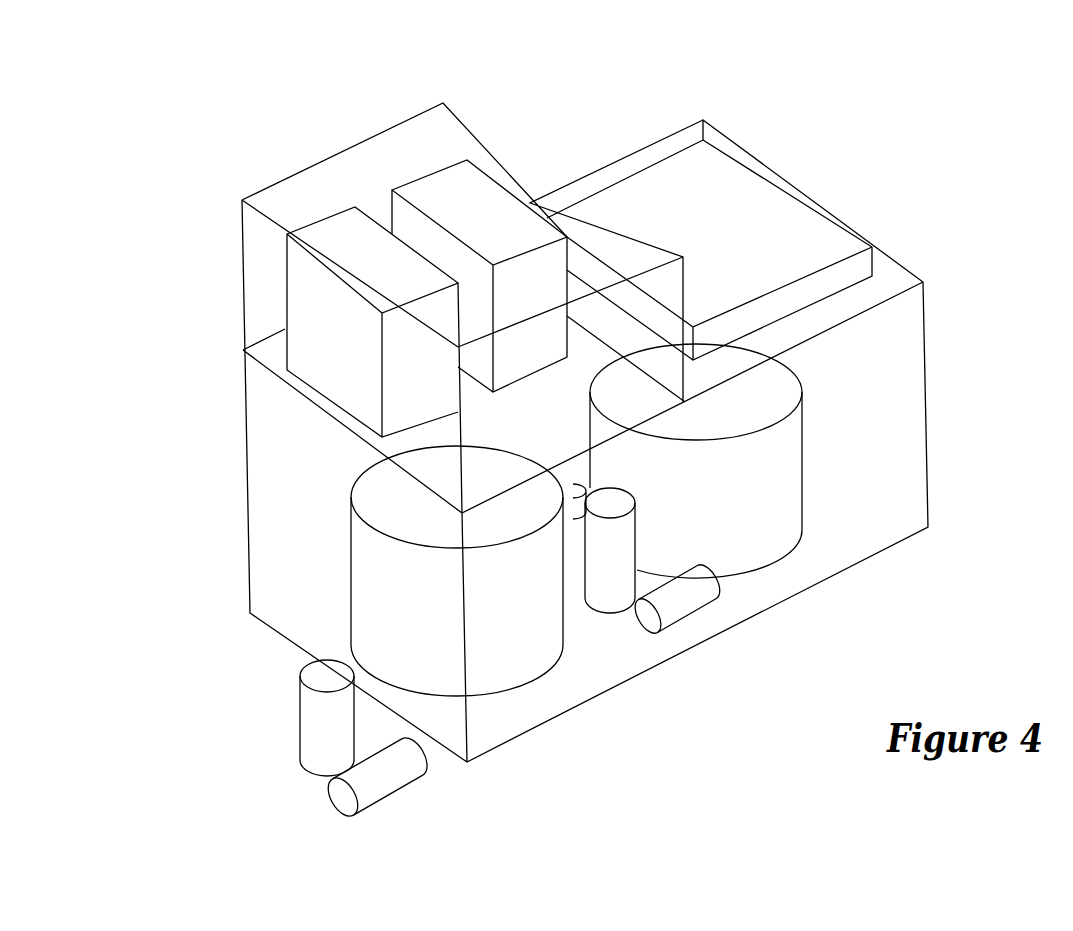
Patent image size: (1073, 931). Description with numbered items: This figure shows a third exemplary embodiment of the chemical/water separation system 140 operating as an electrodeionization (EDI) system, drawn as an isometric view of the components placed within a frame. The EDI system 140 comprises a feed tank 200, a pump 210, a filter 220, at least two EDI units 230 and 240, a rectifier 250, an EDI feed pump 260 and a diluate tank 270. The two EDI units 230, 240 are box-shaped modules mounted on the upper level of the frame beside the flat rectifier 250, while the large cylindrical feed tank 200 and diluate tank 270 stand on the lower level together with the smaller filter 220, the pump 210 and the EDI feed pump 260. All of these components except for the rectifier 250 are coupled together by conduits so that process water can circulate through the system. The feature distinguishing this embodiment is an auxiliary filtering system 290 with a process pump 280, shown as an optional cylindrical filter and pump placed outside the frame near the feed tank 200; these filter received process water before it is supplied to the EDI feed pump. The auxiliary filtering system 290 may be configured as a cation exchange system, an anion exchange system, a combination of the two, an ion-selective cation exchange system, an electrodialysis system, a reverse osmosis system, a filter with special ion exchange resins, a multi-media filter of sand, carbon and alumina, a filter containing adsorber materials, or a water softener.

The chemical/water separation system 140 is at (47, 66).
The feed tank 200 is at (508, 590).
The pump 210 is at (757, 678).
The filter 220 is at (630, 562).
The EDI unit 230 is at (425, 57).
The EDI unit 240 is at (551, 285).
The rectifier 250 is at (745, 267).
The EDI feed pump 260 is at (573, 522).
The diluate tank 270 is at (723, 520).
The process pump 280 is at (472, 822).
The auxiliary filtering system 290 is at (348, 735).